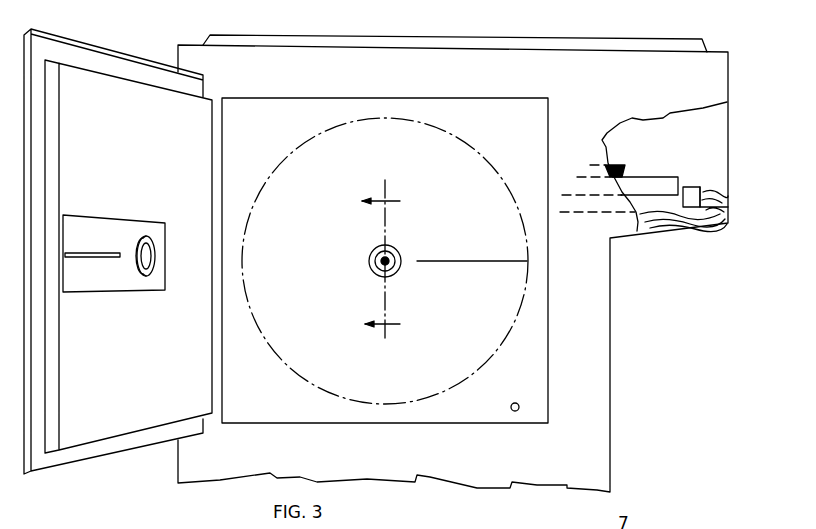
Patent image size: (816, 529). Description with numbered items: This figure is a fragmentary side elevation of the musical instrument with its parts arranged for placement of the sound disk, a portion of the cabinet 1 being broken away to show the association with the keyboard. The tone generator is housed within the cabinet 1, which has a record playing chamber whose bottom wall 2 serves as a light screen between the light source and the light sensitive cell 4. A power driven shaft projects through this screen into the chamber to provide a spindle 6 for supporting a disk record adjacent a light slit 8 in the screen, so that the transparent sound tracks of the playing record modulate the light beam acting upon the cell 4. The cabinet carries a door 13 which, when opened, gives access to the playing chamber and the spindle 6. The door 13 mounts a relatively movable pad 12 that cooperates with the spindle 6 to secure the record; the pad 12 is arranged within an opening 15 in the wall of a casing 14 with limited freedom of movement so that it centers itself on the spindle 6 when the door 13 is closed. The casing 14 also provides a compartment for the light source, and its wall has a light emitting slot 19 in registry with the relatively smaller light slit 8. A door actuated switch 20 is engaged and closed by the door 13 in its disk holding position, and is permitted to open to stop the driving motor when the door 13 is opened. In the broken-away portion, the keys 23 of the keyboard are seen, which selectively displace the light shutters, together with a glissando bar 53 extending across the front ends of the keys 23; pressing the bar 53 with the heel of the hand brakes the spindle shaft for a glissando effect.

The cabinet 1 is at (612, 333).
The bottom wall 2 is at (545, 113).
The light sensitive cell 4 is at (385, 261).
The spindle 6 is at (393, 252).
The light slit 8 is at (453, 261).
The pad 12 is at (152, 243).
The door 13 is at (113, 448).
The casing 14 is at (155, 283).
The opening 15 is at (138, 275).
The light emitting slot 19 is at (102, 253).
The door actuated switch 20 is at (520, 406).
The keys 23 is at (637, 177).
The bar 53 is at (687, 192).